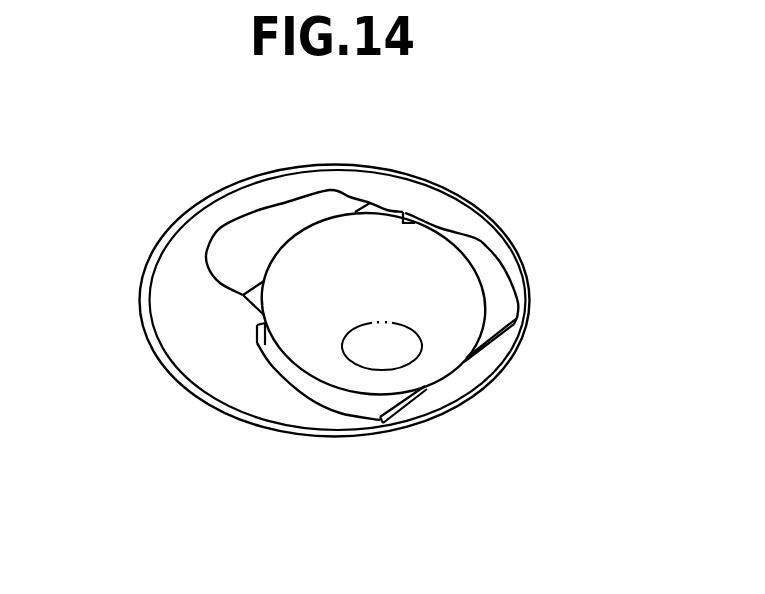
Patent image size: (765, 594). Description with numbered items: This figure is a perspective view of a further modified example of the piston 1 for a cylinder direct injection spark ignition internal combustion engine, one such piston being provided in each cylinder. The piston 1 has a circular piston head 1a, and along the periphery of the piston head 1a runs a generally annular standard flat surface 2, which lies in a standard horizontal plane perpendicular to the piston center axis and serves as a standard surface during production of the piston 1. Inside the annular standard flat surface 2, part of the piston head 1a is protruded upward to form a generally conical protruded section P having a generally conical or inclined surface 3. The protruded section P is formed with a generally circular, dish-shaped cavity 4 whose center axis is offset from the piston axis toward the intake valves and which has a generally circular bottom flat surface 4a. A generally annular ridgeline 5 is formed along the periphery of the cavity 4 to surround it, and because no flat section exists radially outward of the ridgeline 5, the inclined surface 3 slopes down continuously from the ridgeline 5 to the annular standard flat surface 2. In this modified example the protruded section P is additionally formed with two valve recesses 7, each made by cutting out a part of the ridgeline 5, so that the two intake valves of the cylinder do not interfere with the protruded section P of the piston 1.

The piston 1 is at (522, 203).
The piston head 1a is at (235, 183).
The annular standard flat surface 2 is at (189, 379).
The inclined surface 3 is at (180, 322).
The cavity 4 is at (332, 365).
The bottom flat surface 4a is at (407, 350).
The ridgeline 5 is at (283, 249).
The valve recess 7 is at (498, 287).
The protruded section P is at (437, 198).